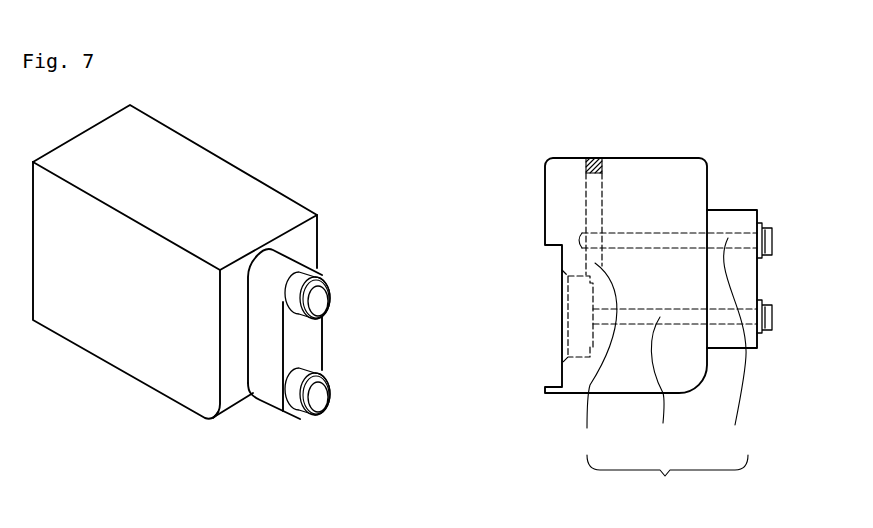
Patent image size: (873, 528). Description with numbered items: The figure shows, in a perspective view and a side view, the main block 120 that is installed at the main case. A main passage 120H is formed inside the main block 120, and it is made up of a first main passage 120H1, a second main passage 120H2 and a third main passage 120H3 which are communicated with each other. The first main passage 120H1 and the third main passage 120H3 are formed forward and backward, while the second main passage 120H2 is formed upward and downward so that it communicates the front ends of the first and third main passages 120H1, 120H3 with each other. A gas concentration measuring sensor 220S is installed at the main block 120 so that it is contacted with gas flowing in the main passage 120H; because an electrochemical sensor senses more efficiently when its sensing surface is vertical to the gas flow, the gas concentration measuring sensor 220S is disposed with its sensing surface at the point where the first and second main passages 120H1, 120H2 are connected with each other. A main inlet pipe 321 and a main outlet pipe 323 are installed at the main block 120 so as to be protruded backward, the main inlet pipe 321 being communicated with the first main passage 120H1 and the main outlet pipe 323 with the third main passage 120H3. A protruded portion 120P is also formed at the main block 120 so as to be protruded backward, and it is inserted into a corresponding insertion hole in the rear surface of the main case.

The main block 120 is at (222, 182).
The protruded portion 120P is at (315, 340).
The main outlet pipe 323 is at (333, 302).
The main inlet pipe 321 is at (332, 392).
The gas concentration measuring sensor 220S is at (578, 318).
The main passage 120H is at (667, 478).
The first main passage 120H1 is at (660, 382).
The second main passage 120H2 is at (587, 357).
The third main passage 120H3 is at (733, 344).